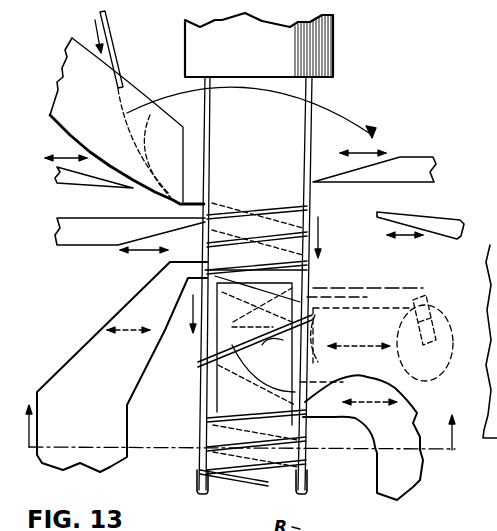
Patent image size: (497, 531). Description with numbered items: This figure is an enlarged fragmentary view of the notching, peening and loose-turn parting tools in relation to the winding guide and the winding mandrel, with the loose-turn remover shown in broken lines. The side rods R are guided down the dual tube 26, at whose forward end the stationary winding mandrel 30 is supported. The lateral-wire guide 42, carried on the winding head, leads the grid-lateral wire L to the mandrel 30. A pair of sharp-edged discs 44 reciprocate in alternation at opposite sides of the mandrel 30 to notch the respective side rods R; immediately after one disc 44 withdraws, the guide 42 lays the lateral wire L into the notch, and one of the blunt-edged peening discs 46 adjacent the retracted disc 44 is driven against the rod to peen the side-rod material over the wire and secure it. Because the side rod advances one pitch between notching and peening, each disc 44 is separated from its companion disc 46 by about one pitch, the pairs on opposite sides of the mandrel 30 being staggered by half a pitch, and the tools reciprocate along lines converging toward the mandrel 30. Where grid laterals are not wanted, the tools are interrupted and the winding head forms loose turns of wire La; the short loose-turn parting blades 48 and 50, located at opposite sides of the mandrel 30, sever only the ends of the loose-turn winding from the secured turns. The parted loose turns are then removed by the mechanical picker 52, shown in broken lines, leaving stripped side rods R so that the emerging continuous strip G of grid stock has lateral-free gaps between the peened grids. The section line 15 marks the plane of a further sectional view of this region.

The dual tube (side-rod guide) 26 is at (336, 70).
The winding mandrel 30 is at (202, 440).
The lateral-wire guide 42 is at (102, 149).
The sharp-edged notching discs 44 is at (85, 178).
The blunt-edged peening discs 46 is at (97, 242).
The loose-turn parting blade 48 is at (94, 415).
The loose-turn parting blade 50 is at (410, 475).
The mechanical picker (loose-turn remover) 52 is at (421, 275).
The section line 15- 15 is at (242, 407).
The grid-lateral wire L is at (120, 70).
The loose-turn grid-lateral wire La is at (204, 373).
The side rods R is at (205, 107).
The grid stock strip G is at (178, 463).